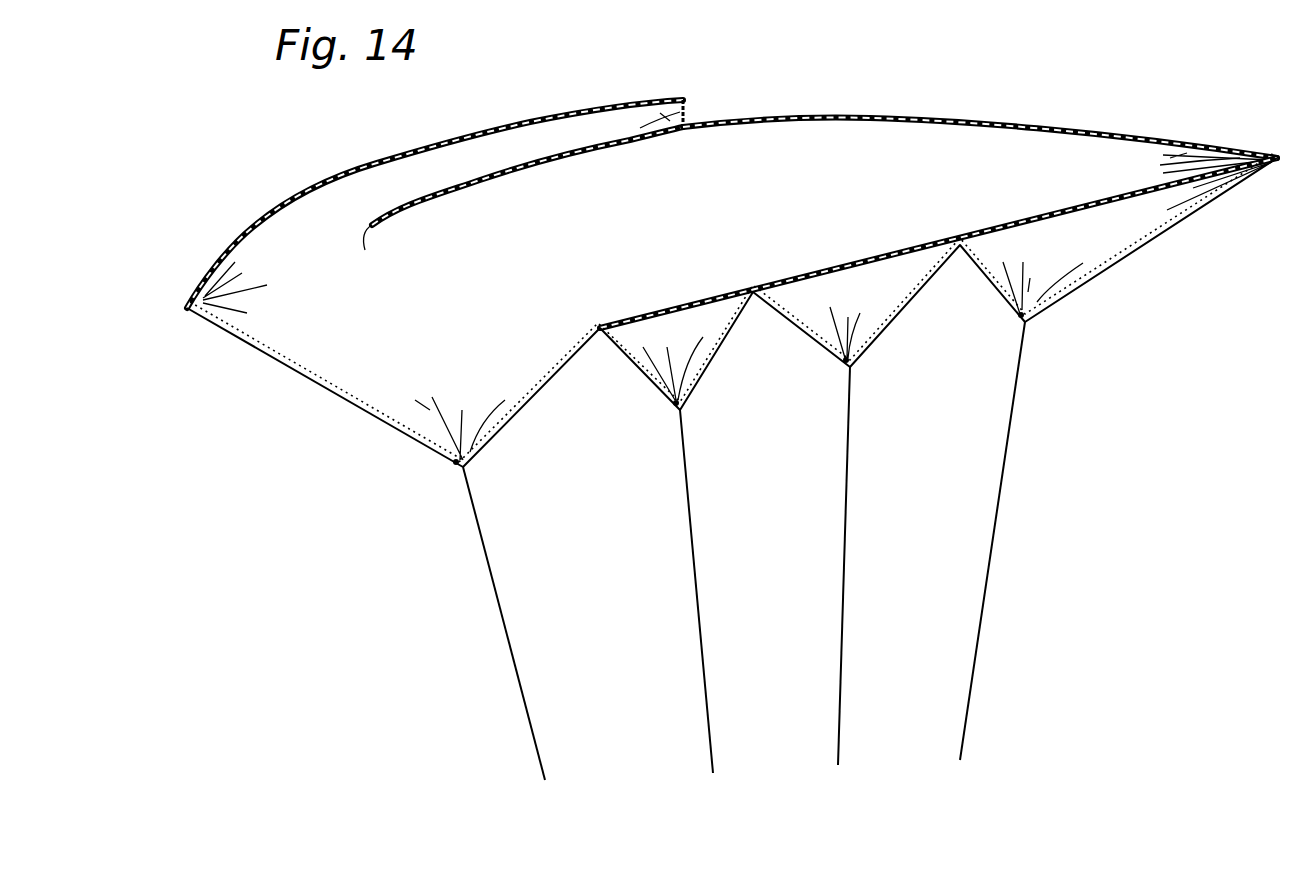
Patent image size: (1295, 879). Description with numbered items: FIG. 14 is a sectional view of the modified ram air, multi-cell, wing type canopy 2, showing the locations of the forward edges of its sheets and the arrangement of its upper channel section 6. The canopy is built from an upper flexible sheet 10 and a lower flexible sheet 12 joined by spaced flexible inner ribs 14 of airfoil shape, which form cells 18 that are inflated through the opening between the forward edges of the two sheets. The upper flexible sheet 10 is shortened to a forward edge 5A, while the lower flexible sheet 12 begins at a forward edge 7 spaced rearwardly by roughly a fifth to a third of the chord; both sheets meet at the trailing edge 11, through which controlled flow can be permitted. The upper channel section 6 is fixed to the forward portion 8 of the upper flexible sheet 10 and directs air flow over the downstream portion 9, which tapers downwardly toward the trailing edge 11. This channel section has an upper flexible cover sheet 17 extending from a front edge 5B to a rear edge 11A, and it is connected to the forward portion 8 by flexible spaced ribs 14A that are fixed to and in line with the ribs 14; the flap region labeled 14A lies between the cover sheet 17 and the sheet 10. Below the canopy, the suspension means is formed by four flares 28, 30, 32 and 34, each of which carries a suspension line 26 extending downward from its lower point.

The modified ram air, multi-cell, wing type canopy 2 is at (247, 219).
The forward edge of upper flexible sheet 5A is at (390, 255).
The front edge of upper flexible cover sheet 5B is at (185, 312).
The upper channel section 6 is at (508, 108).
The forward edge of lower flexible sheet 7 is at (598, 325).
The forward portion of upper flexible sheet 8 is at (513, 162).
The downstream portion of upper flexible sheet 9 is at (735, 122).
The upper flexible sheet 10 is at (849, 105).
The trailing edge 11 is at (1278, 157).
The rear edge of upper flexible cover sheet 11A is at (684, 99).
The lower flexible sheet 12 is at (847, 262).
The flexible inner ribs 14 is at (672, 232).
The flexible spaced ribs 14A is at (570, 151).
The upper flexible cover sheet 17 is at (378, 163).
The cells 18 is at (878, 167).
The suspension line 26 is at (510, 635).
The flare 28 is at (430, 397).
The flare 30 is at (643, 370).
The flare 32 is at (830, 307).
The flare 34 is at (1023, 260).